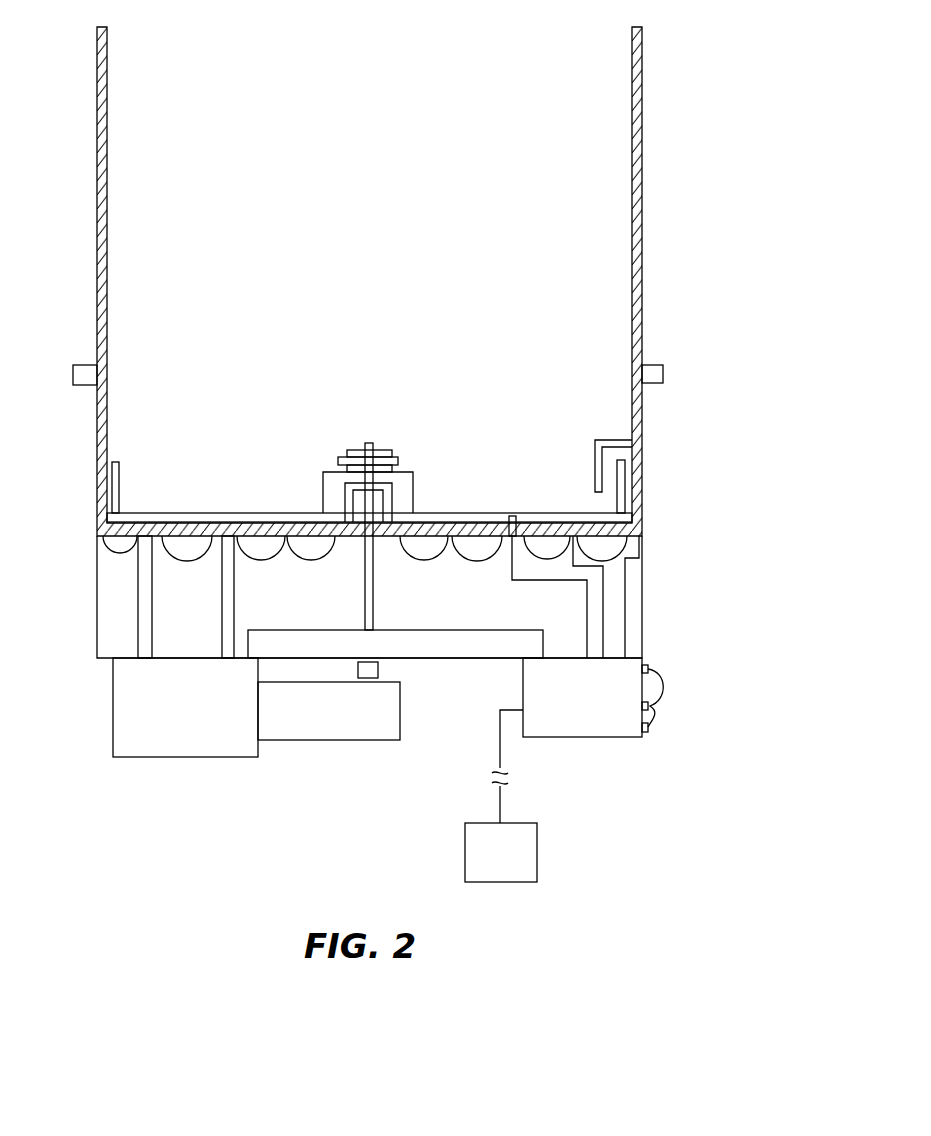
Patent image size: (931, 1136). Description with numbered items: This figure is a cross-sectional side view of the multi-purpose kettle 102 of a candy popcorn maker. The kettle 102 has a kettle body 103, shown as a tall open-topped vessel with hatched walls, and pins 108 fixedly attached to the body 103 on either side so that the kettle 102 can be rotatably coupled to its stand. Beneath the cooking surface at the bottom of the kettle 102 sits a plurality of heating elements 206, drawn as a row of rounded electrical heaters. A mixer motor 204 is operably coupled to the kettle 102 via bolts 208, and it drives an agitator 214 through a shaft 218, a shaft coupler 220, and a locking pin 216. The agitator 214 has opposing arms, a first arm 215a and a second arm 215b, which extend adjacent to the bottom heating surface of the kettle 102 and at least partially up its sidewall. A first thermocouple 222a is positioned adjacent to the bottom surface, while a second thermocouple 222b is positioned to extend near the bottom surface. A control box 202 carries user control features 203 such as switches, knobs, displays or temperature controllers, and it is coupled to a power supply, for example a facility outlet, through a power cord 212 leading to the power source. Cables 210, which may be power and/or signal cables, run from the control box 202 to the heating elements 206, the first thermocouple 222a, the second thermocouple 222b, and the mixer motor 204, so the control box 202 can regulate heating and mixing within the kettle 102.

The multi-purpose kettle 102 is at (727, 184).
The kettle body 103 is at (632, 250).
The pins 108 is at (80, 364).
The control box 202 is at (600, 737).
The user control features 203 is at (650, 668).
The mixer motor 204 is at (113, 700).
The heating elements 206 is at (183, 553).
The bolts 208 is at (138, 603).
The cables 210 is at (478, 630).
The power cord 212 is at (500, 740).
The agitator 214 is at (415, 480).
The first arm 215a is at (165, 512).
The second arm 215b is at (570, 512).
The locking pin 216 is at (397, 452).
The shaft 218 is at (375, 605).
The shaft coupler 220 is at (378, 675).
The first thermocouple 222a is at (512, 516).
The second thermocouple 222b is at (595, 440).